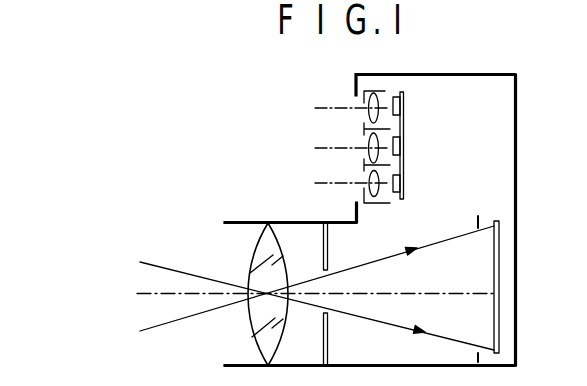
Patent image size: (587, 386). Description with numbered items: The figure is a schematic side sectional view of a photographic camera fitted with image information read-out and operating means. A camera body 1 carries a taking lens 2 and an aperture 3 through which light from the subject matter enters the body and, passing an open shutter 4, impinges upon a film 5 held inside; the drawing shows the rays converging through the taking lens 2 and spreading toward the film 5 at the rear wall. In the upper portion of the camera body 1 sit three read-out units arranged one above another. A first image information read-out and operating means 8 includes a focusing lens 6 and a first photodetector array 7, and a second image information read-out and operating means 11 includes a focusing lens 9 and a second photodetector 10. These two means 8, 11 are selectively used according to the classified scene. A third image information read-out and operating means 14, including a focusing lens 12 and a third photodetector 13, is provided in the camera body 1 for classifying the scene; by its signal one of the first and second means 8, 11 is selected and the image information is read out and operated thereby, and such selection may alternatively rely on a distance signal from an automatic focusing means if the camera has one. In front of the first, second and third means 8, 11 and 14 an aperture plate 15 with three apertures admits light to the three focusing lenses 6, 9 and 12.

The camera body 1 is at (518, 215).
The taking lens 2 is at (253, 342).
The aperture 3 is at (328, 343).
The shutter 4 is at (480, 220).
The film 5 is at (499, 332).
The focusing lens 6 is at (377, 93).
The first photodetector array 7 is at (404, 105).
The first image information read-out and operating means 8 is at (384, 96).
The focusing lens 9 is at (364, 141).
The second photodetector 10 is at (404, 138).
The second image information read-out and operating means 11 is at (405, 152).
The focusing lens 12 is at (377, 204).
The third photodetector 13 is at (403, 180).
The third image information read-out and operating means 14 is at (386, 193).
The aperture plate 15 is at (364, 168).